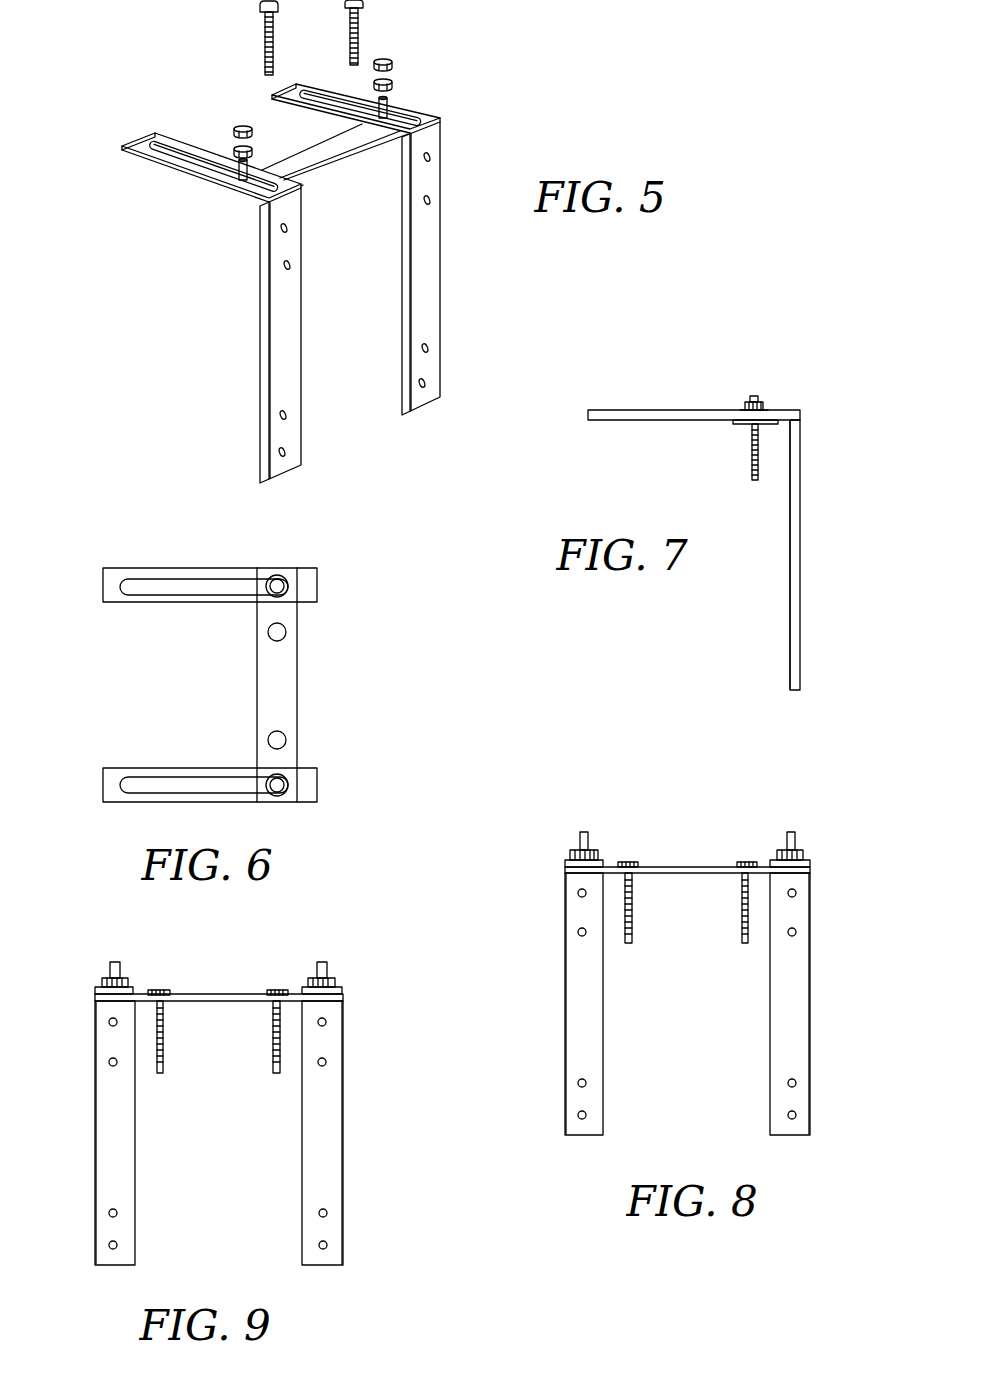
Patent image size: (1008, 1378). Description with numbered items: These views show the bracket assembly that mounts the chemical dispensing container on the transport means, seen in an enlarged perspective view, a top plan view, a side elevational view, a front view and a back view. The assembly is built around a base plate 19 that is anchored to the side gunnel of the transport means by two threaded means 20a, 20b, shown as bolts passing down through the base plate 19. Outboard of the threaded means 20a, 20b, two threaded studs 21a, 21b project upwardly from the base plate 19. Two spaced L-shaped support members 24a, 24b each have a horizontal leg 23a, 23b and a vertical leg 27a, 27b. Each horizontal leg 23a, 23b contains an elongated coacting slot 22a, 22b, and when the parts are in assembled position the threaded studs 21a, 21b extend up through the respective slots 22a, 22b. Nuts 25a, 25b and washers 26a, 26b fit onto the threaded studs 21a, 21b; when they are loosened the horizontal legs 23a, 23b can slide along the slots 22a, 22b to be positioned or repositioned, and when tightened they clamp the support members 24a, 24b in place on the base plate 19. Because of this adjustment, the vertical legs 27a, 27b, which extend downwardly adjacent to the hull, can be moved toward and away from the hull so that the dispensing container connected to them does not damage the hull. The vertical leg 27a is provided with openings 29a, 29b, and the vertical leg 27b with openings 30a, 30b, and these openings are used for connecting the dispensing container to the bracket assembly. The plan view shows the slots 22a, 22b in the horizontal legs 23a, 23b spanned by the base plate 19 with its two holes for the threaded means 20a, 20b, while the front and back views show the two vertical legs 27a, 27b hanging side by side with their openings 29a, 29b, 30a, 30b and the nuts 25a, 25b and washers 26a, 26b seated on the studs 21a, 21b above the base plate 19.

In FIG. 5, the base plate 19 is at (335, 155).
In FIG. 6, the base plate 19 is at (272, 680).
In FIG. 7, the base plate 19 is at (733, 422).
In FIG. 5, the threaded means 20a is at (358, 22).
In FIG. 6, the threaded means 20a is at (267, 632).
In FIG. 8, the threaded means 20a is at (632, 927).
In FIG. 9, the threaded means 20a is at (273, 1052).
In FIG. 5, the threaded means 20b is at (265, 33).
In FIG. 6, the threaded means 20b is at (267, 740).
In FIG. 7, the threaded means 20b is at (752, 465).
In FIG. 8, the threaded means 20b is at (743, 907).
In FIG. 9, the threaded means 20b is at (195, 1031).
In FIG. 5, the threaded stud 21a is at (390, 106).
In FIG. 6, the threaded stud 21a is at (280, 580).
In FIG. 8, the threaded stud 21a is at (583, 832).
In FIG. 9, the threaded stud 21a is at (320, 962).
In FIG. 5, the threaded stud 21b is at (244, 182).
In FIG. 6, the threaded stud 21b is at (280, 777).
In FIG. 7, the threaded stud 21b is at (754, 396).
In FIG. 8, the threaded stud 21b is at (792, 832).
In FIG. 9, the threaded stud 21b is at (113, 962).
In FIG. 5, the coacting slot 22a is at (337, 92).
In FIG. 6, the coacting slot 22a is at (197, 583).
In FIG. 5, the coacting slot 22b is at (187, 146).
In FIG. 6, the coacting slot 22b is at (190, 780).
In FIG. 5, the horizontal leg 23a is at (289, 92).
In FIG. 6, the horizontal leg 23a is at (115, 575).
In FIG. 5, the horizontal leg 23b is at (140, 147).
In FIG. 6, the horizontal leg 23b is at (115, 777).
In FIG. 7, the horizontal leg 23b is at (615, 408).
In FIG. 5, the L-shaped support member 24a is at (450, 253).
In FIG. 8, the L-shaped support member 24a is at (558, 964).
In FIG. 9, the L-shaped support member 24a is at (348, 1083).
In FIG. 5, the L-shaped support member 24b is at (290, 292).
In FIG. 7, the L-shaped support member 24b is at (802, 457).
In FIG. 8, the L-shaped support member 24b is at (810, 952).
In FIG. 9, the L-shaped support member 24b is at (90, 1080).
In FIG. 5, the nut 25a is at (250, 127).
In FIG. 6, the nut 25a is at (283, 582).
In FIG. 8, the nut 25a is at (597, 850).
In FIG. 9, the nut 25a is at (310, 978).
In FIG. 6, the nut 25b is at (287, 783).
In FIG. 7, the nut 25b is at (767, 402).
In FIG. 8, the nut 25b is at (805, 850).
In FIG. 9, the nut 25b is at (103, 978).
In FIG. 5, the washer 26a is at (390, 83).
In FIG. 8, the washer 26a is at (568, 862).
In FIG. 9, the washer 26a is at (342, 990).
In FIG. 5, the washer 26b is at (234, 153).
In FIG. 7, the washer 26b is at (782, 408).
In FIG. 8, the washer 26b is at (808, 865).
In FIG. 9, the washer 26b is at (98, 995).
In FIG. 5, the vertical leg 27a is at (427, 296).
In FIG. 8, the vertical leg 27a is at (577, 1048).
In FIG. 9, the vertical leg 27a is at (332, 1177).
In FIG. 5, the vertical leg 27b is at (283, 340).
In FIG. 7, the vertical leg 27b is at (793, 508).
In FIG. 8, the vertical leg 27b is at (792, 995).
In FIG. 9, the vertical leg 27b is at (113, 1127).
In FIG. 5, the opening 29a is at (430, 195).
In FIG. 8, the opening 29a is at (580, 893).
In FIG. 9, the opening 29a is at (328, 1022).
In FIG. 5, the opening 29b is at (423, 383).
In FIG. 8, the opening 29b is at (582, 1115).
In FIG. 9, the opening 29b is at (323, 1245).
In FIG. 5, the opening 30a is at (290, 222).
In FIG. 8, the opening 30a is at (796, 893).
In FIG. 9, the opening 30a is at (108, 1022).
In FIG. 5, the opening 30b is at (283, 448).
In FIG. 8, the opening 30b is at (792, 1115).
In FIG. 9, the opening 30b is at (113, 1245).